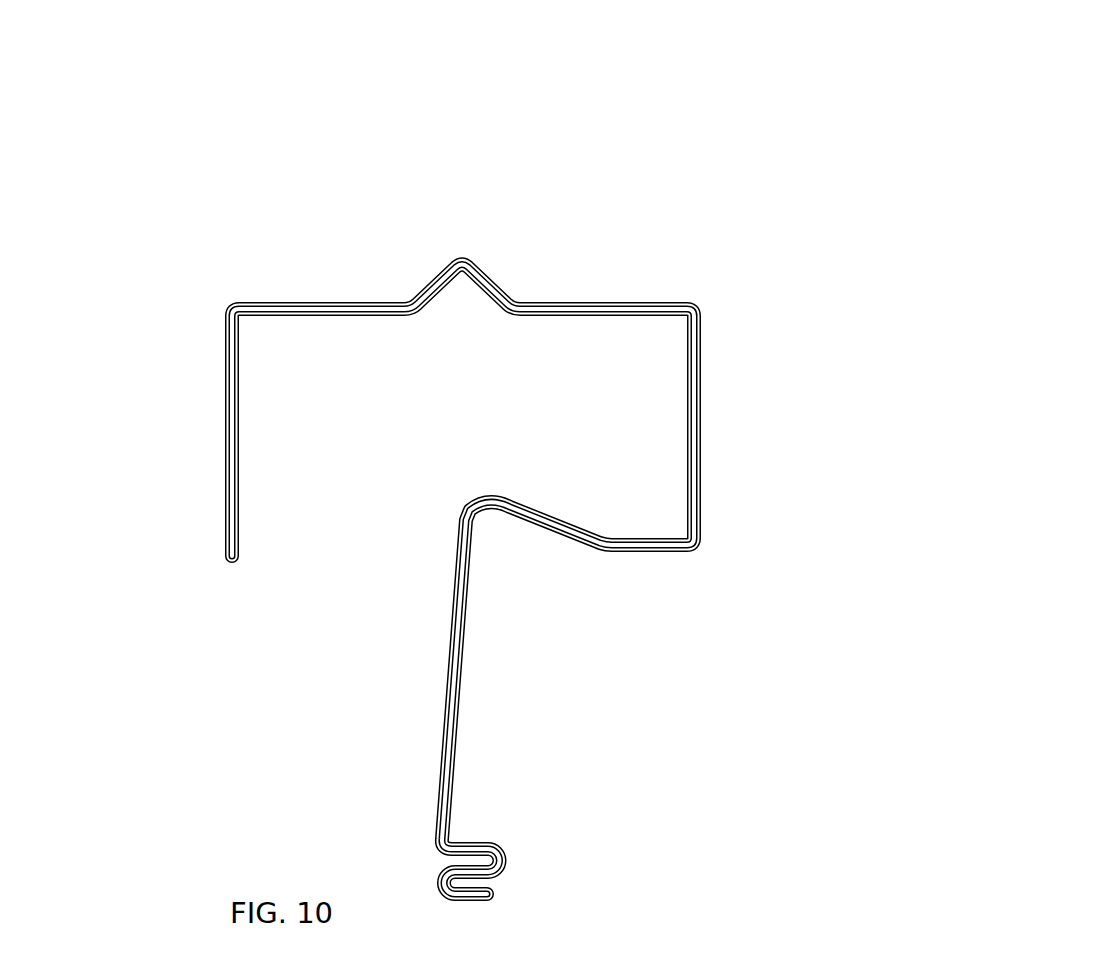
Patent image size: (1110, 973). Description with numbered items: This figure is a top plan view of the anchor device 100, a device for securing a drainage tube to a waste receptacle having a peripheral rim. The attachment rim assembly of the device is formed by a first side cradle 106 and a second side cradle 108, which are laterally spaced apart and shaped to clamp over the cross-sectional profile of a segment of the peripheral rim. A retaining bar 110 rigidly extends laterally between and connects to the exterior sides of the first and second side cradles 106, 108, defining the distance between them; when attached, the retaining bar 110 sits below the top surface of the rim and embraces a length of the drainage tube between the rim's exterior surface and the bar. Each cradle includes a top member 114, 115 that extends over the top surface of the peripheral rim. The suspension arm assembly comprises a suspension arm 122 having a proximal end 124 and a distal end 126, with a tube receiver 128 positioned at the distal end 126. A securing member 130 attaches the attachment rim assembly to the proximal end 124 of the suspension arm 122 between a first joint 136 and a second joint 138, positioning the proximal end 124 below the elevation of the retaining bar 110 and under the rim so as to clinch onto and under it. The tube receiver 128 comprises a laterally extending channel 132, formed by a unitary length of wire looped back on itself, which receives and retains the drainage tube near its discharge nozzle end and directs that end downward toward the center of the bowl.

The anchor device 100 is at (685, 122).
The first side cradle 106 is at (726, 378).
The second side cradle 108 is at (192, 363).
The retaining bar 110 is at (318, 300).
The top member 114 is at (703, 465).
The top member 115 is at (225, 450).
The suspension arm 122 is at (443, 708).
The proximal end 124 is at (458, 489).
The distal end 126 is at (485, 814).
The tube receiver 128 is at (539, 862).
The securing member 130 is at (542, 528).
The channel 132 is at (420, 250).
The first joint 136 is at (488, 497).
The second joint 138 is at (606, 540).